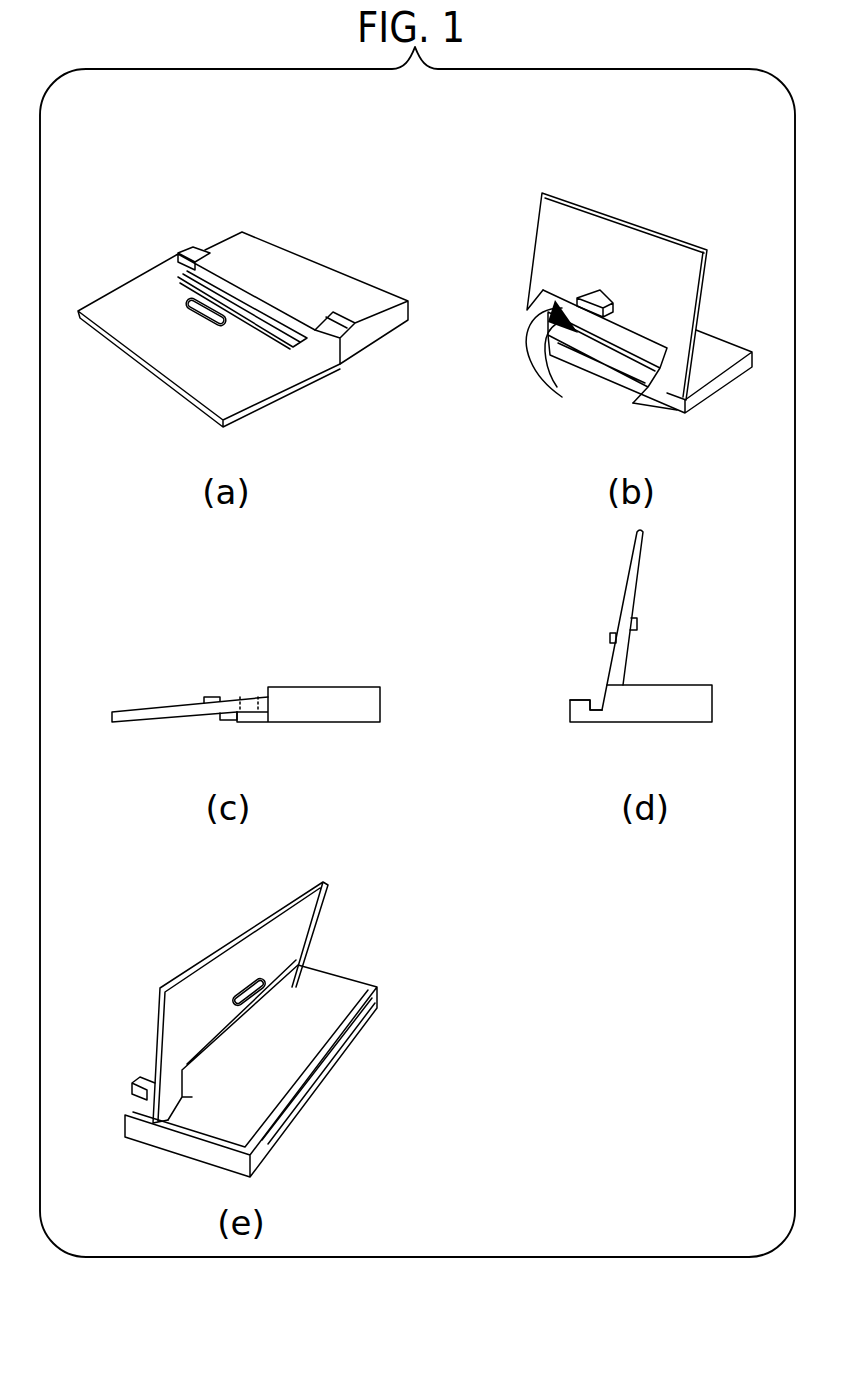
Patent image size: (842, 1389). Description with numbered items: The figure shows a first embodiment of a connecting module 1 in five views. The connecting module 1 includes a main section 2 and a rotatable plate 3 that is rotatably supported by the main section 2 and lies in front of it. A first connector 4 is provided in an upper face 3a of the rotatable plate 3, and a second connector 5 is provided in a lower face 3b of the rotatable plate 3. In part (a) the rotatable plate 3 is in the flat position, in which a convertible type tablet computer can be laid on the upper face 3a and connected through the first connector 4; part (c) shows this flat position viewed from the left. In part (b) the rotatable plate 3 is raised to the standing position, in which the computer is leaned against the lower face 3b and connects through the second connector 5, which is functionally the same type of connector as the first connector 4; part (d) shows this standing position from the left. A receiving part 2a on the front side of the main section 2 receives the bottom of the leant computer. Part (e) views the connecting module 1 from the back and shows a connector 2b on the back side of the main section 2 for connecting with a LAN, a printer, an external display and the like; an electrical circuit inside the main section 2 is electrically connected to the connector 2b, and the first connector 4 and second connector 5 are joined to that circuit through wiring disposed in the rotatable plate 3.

The connecting module 1 is at (250, 147).
The main section 2 is at (285, 243).
The receiving part 2a is at (637, 388).
The connector 2b is at (368, 1020).
The rotatable plate 3 is at (133, 277).
The upper face 3a is at (260, 378).
The lower face 3b is at (555, 225).
The first connector 4 is at (182, 299).
The second connector 5 is at (574, 290).